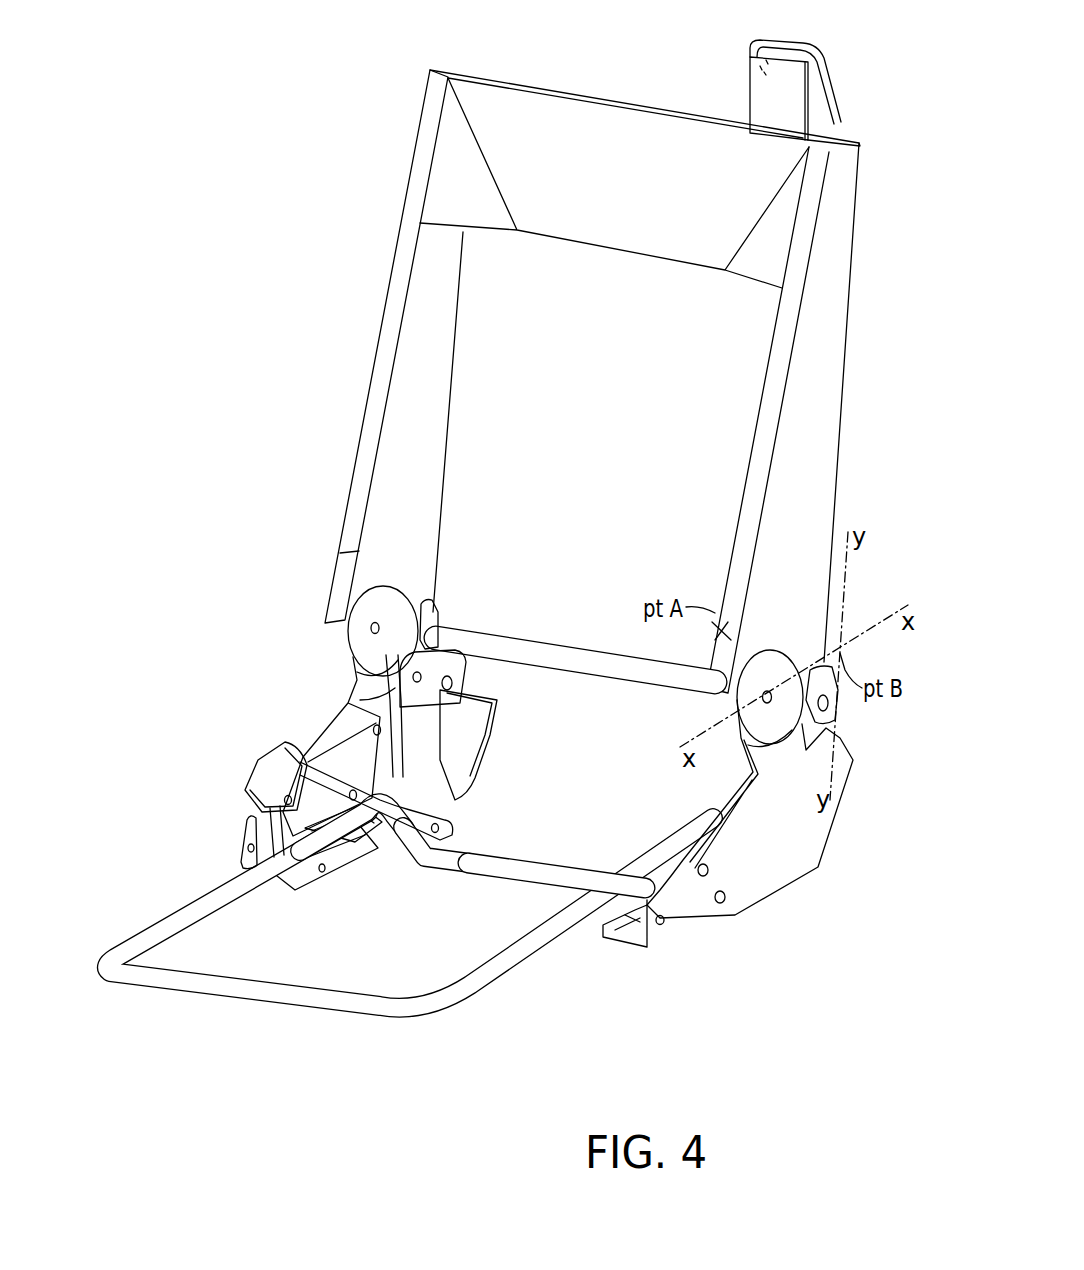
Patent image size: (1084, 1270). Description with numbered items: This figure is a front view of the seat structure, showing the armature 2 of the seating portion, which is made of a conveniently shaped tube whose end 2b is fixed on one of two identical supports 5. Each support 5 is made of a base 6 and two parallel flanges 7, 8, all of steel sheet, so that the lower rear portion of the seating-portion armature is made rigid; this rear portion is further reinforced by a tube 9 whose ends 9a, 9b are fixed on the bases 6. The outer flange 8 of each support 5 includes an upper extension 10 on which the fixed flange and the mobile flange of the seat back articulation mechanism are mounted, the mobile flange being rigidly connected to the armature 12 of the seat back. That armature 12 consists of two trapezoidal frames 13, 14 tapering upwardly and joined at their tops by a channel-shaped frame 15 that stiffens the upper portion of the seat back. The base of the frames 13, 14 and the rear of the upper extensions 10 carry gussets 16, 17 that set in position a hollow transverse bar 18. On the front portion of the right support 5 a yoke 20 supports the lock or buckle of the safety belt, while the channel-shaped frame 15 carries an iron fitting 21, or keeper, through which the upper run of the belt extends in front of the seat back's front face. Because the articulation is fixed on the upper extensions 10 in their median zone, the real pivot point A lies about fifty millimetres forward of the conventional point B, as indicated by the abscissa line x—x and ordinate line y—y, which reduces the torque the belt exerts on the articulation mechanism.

The armature of the seating portion 2 is at (200, 897).
The end of the tube 2b is at (357, 853).
The support 5 is at (470, 730).
The base 6 is at (383, 843).
The flange 7 is at (443, 703).
The outer flange 8 is at (250, 835).
The tube 9 is at (577, 877).
The end of the tube 9a is at (423, 837).
The end of the tube 9b is at (436, 845).
The upper extension 10 is at (363, 647).
The armature of the seat back 12 is at (428, 387).
The frame 13 is at (821, 414).
The frame 14 is at (371, 305).
The channel-shaped frame 15 is at (592, 123).
The gusset 16 is at (433, 612).
The gusset 17 is at (828, 683).
The hollow transverse bar 18 is at (548, 645).
The yoke 20 is at (256, 750).
The iron fitting 21 is at (793, 48).